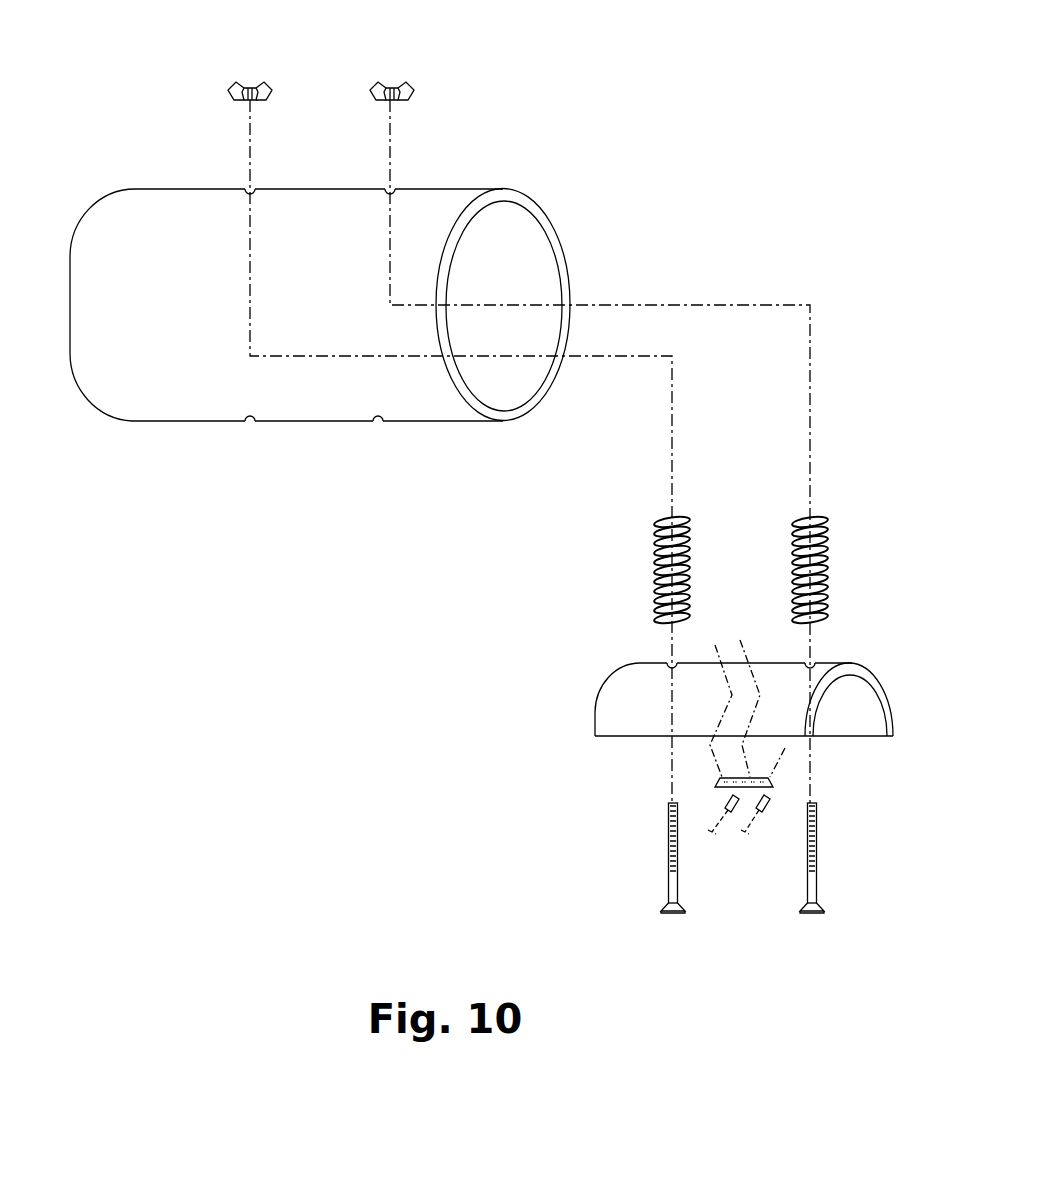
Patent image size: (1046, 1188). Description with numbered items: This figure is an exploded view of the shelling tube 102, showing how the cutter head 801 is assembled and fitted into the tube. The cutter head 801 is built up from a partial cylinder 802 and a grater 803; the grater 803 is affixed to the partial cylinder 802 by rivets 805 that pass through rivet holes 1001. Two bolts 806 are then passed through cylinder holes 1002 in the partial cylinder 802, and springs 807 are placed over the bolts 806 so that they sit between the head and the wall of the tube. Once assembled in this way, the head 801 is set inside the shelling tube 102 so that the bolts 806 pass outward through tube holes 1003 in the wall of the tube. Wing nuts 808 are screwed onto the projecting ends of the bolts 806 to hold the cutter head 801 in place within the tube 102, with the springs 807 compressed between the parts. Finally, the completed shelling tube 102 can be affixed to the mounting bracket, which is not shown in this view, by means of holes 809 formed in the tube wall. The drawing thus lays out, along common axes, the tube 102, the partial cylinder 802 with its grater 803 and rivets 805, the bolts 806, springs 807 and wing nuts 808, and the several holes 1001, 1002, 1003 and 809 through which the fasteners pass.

The shelling tube 102 is at (538, 207).
The cutter head 801 is at (672, 643).
The partial cylinder 802 is at (880, 693).
The grater 803 is at (770, 782).
The rivets 805 is at (745, 828).
The bolts 806 is at (808, 890).
The springs 807 is at (805, 527).
The wing nuts 808 is at (372, 90).
The holes 809 is at (378, 421).
The rivet holes 1001 is at (722, 673).
The cylinder holes 1002 is at (808, 661).
The tube holes 1003 is at (390, 188).